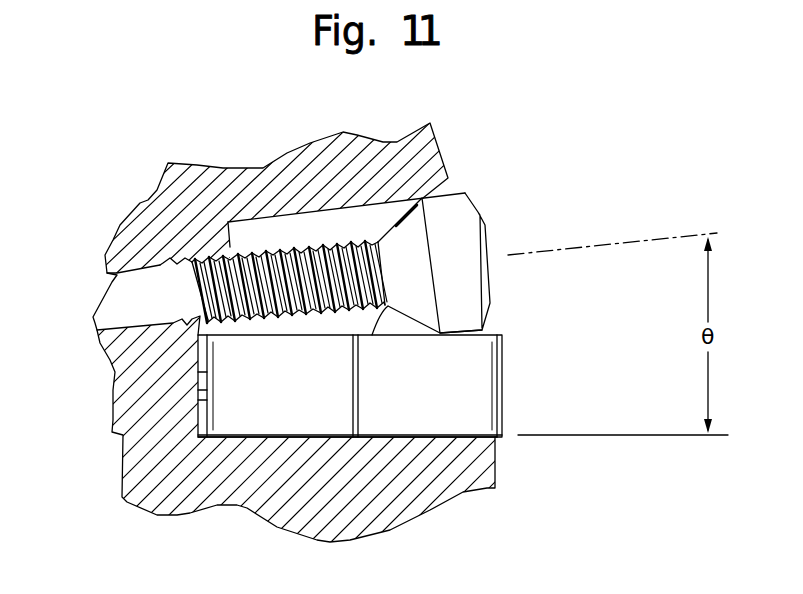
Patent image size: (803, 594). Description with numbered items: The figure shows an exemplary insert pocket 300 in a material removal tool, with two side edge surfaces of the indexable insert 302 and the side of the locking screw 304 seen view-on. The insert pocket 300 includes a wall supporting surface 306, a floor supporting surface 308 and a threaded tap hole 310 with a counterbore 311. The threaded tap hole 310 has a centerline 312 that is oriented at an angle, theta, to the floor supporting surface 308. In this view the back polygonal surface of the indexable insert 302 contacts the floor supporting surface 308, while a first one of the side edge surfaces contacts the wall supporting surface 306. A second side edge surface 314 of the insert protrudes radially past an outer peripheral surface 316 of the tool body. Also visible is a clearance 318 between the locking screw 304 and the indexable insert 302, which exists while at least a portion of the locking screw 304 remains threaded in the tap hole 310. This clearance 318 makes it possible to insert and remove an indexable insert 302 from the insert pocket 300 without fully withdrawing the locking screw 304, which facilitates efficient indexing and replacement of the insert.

The insert pocket 300 is at (540, 147).
The indexable insert 302 is at (493, 370).
The locking screw 304 is at (487, 233).
The wall supporting surface 306 is at (200, 377).
The floor supporting surface 308 is at (432, 437).
The threaded tap hole 310 is at (203, 243).
The counterbore 311 is at (275, 232).
The centerline 312 is at (652, 238).
The second side edge surface 314 is at (503, 410).
The outer peripheral surface 316 is at (500, 468).
The clearance 318 is at (478, 332).